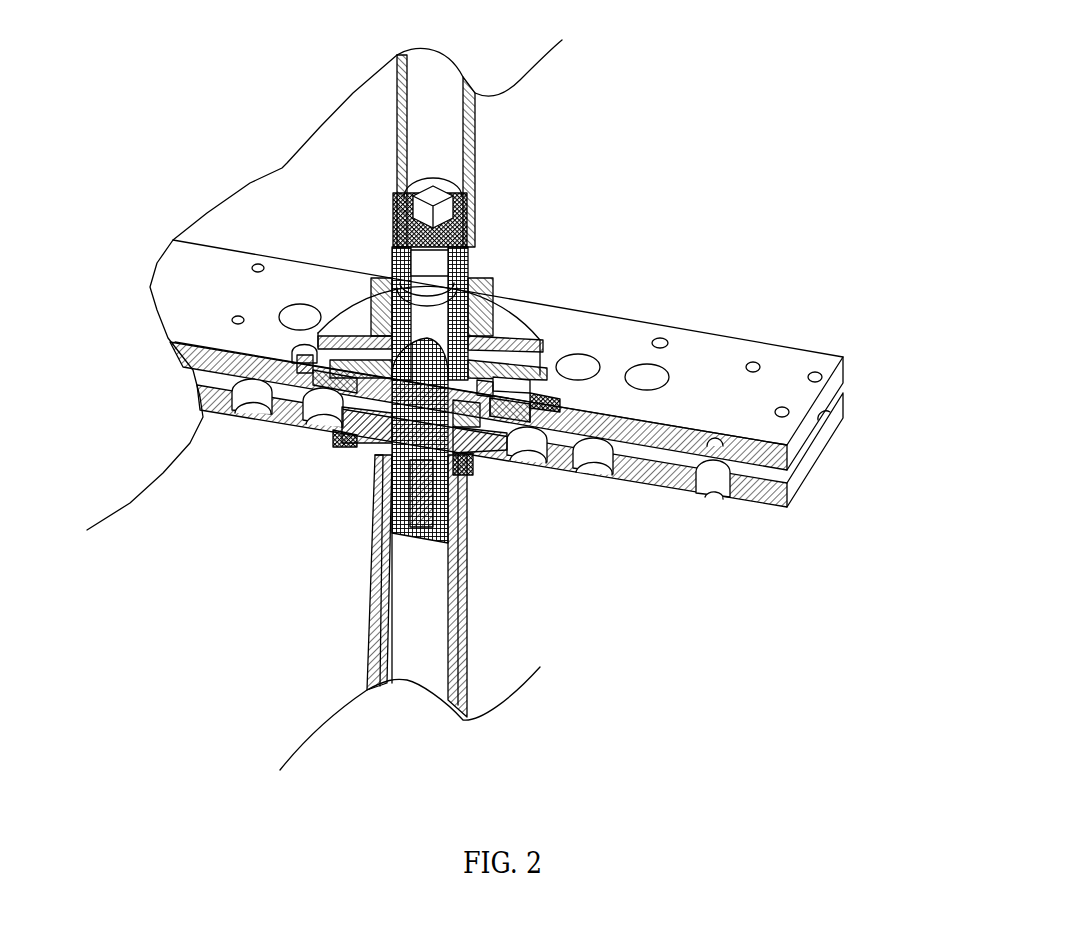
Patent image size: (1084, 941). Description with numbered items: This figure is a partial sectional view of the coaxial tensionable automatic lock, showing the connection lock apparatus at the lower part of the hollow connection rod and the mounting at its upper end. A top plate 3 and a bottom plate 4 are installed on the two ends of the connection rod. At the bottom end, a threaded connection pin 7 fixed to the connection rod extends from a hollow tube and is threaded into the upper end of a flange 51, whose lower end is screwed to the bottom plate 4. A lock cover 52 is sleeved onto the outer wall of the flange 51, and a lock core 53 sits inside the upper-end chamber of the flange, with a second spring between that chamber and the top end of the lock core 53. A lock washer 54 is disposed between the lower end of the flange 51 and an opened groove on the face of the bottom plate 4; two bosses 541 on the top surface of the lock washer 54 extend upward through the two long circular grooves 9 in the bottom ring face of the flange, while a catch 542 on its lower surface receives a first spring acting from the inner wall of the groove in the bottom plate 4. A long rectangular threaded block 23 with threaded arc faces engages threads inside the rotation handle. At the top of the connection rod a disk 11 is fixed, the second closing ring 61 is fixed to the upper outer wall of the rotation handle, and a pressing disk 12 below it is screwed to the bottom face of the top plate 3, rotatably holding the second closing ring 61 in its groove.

The top plate 3 is at (786, 508).
The bottom plate 4 is at (703, 370).
The threaded connection pin 7 is at (456, 192).
The long circular grooves 9 is at (547, 421).
The disk 11 is at (357, 443).
The pressing disk 12 is at (483, 468).
The threaded block 23 is at (467, 573).
The flange 51 is at (478, 290).
The lock cover 52 is at (552, 395).
The lock core 53 is at (515, 360).
The lock washer 54 is at (560, 380).
The second closing ring 61 is at (370, 450).
The bosses 541 is at (559, 380).
The catch 542 is at (493, 420).